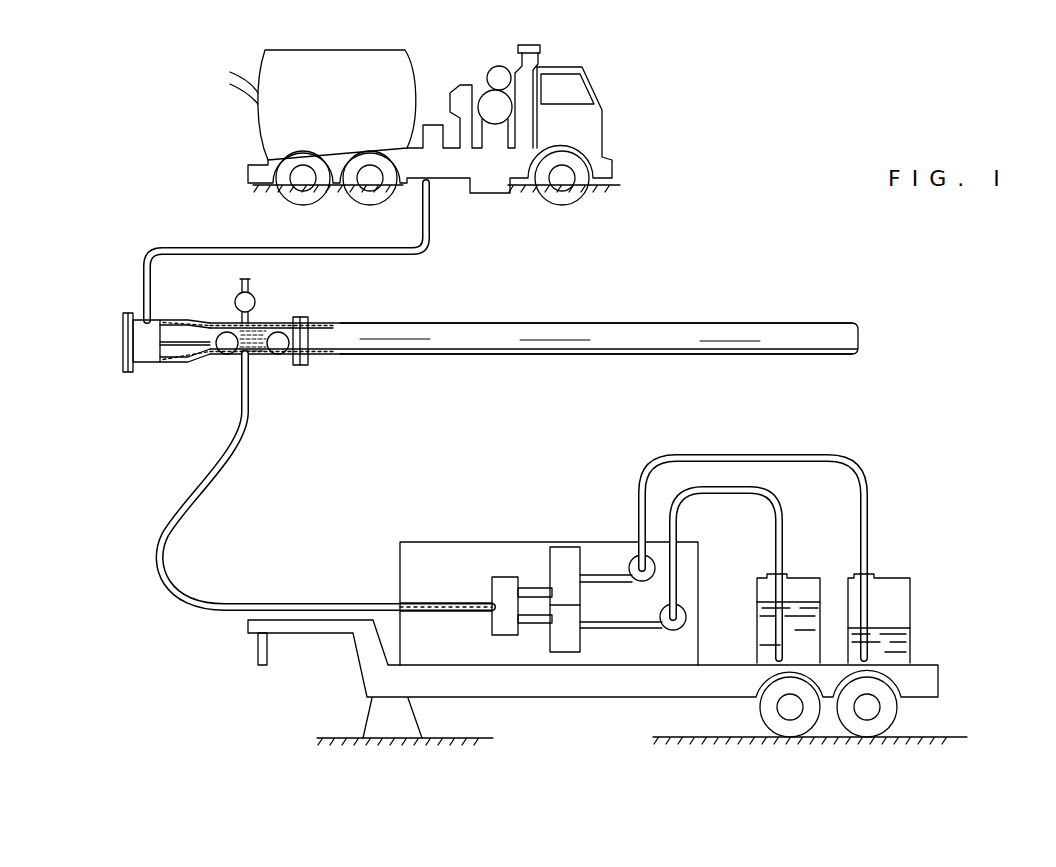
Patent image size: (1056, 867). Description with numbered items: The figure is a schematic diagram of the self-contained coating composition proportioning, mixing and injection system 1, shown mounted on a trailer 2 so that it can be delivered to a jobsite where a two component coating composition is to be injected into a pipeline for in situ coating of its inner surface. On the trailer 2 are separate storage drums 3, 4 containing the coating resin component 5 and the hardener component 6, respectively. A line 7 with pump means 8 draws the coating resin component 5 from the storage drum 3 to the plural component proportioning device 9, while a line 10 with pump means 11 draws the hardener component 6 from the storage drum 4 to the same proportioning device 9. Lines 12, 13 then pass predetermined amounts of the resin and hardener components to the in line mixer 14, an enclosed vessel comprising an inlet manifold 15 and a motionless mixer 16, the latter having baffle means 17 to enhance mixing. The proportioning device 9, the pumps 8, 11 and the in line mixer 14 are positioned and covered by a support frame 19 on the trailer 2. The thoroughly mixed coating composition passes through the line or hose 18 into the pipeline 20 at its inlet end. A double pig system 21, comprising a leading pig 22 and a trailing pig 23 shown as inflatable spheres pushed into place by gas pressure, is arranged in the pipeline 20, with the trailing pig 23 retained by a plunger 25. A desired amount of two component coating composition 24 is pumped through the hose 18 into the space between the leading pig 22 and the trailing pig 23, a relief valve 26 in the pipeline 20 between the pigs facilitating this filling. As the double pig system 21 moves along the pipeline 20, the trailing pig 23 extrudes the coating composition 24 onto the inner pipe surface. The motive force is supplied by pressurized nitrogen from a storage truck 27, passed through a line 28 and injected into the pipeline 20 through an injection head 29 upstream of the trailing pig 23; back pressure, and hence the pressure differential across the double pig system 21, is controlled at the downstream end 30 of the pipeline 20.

The coating composition proportioning, mixing and injection system 1 is at (535, 528).
The trailer 2 is at (938, 683).
The storage drum 3 is at (907, 603).
The storage drum 4 is at (757, 612).
The coating resin component 5 is at (907, 647).
The hardener component 6 is at (765, 640).
The line 7 is at (868, 515).
The pump means 8 is at (652, 580).
The plural component proportioning device 9 is at (580, 565).
The line 10 is at (783, 521).
The pump means 11 is at (673, 632).
The line 12 is at (535, 587).
The line 13 is at (535, 623).
The in line mixer 14 is at (480, 612).
The inlet manifold 15 is at (495, 580).
The motionless mixer 16 is at (417, 600).
The baffle means 17 is at (448, 602).
The line or hose 18 is at (163, 547).
The support frame 19 is at (428, 540).
The pipeline 20 is at (363, 323).
The double pig system 21 is at (262, 320).
The leading pig 22 is at (282, 349).
The trailing pig 23 is at (228, 350).
The two component coating composition 24 is at (257, 345).
The plunger 25 is at (182, 345).
The relief valve 26 is at (253, 296).
The storage truck 27 is at (256, 90).
The line 28 is at (365, 258).
The injection head 29 is at (137, 362).
The downstream end 30 is at (768, 322).